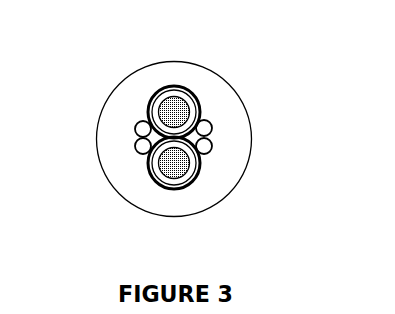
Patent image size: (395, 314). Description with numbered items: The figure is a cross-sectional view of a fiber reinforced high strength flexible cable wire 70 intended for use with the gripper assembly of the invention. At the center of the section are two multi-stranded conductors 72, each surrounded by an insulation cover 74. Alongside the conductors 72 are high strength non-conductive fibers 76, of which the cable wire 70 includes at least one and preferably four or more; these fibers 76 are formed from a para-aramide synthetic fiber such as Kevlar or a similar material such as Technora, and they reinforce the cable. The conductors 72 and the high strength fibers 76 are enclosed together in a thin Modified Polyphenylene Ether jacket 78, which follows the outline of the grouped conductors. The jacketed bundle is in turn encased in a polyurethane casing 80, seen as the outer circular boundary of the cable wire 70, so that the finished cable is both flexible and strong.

The cable wire 70 is at (222, 78).
The multi-stranded conductors 72 is at (178, 99).
The insulation covers 74 is at (162, 88).
The high strength non-conductive fibers 76 is at (210, 139).
The jacket 78 is at (158, 187).
The polyurethane casing 80 is at (108, 156).